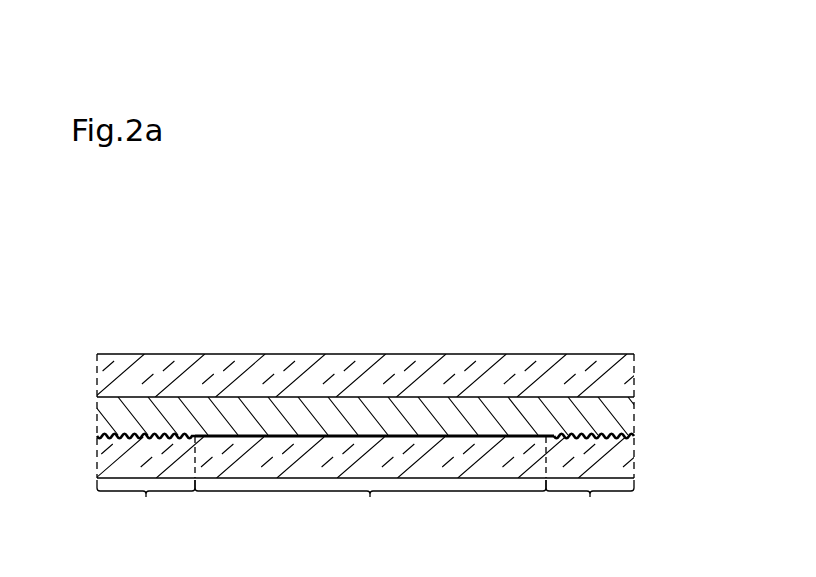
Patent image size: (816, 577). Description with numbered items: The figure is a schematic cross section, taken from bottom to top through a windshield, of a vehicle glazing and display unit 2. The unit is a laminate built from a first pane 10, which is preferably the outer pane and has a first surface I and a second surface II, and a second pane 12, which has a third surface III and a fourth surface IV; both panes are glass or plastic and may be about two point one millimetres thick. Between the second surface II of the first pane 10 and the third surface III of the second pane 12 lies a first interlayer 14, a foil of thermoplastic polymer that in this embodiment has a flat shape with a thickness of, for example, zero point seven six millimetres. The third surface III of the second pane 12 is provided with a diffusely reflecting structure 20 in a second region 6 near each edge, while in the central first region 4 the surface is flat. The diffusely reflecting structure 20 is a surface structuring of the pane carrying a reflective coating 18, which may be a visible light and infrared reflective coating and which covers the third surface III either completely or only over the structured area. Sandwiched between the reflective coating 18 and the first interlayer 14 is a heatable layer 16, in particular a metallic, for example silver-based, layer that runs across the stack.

The vehicle glazing and display unit 2 is at (622, 265).
The first pane 10 is at (623, 376).
The first interlayer 14 is at (627, 412).
The second pane 12 is at (623, 455).
The heatable layer 16 is at (97, 436).
The diffusely reflecting structure 20 is at (654, 437).
The reflective coating 18 is at (621, 431).
The second region 6 is at (365, 484).
The first region 4 is at (370, 506).
The first surface I is at (387, 354).
The second surface II is at (359, 398).
The third surface III is at (357, 436).
The fourth surface IV is at (387, 477).